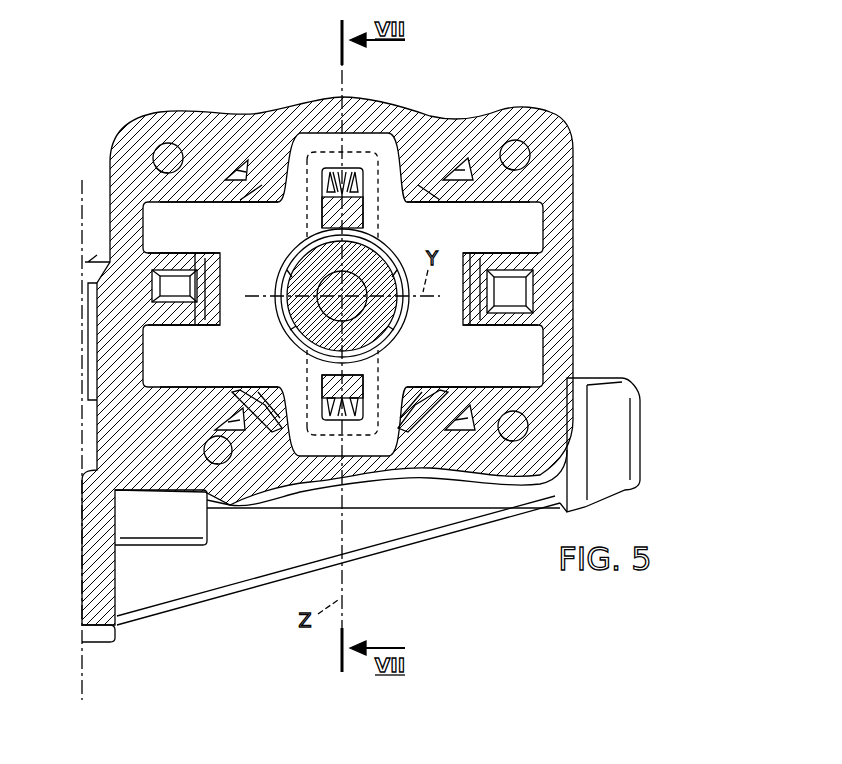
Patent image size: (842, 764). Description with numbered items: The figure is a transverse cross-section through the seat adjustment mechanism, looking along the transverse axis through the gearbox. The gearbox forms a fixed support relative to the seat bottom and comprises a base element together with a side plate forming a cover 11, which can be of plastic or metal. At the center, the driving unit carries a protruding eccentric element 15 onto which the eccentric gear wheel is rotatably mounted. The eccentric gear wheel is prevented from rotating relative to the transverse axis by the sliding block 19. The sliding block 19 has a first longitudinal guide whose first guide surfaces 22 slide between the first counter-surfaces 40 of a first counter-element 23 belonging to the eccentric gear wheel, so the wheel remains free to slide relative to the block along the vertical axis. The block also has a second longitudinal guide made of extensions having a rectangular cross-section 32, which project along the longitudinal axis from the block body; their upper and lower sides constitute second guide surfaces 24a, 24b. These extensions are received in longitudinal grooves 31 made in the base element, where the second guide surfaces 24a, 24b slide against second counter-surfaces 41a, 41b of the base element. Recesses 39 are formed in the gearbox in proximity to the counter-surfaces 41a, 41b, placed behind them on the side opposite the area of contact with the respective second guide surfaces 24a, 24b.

The cover 11 is at (505, 115).
The eccentric element 15 is at (287, 278).
The sliding block 19 is at (215, 373).
The first guide surfaces 22 is at (320, 200).
The first counter-element 23 is at (358, 172).
The second guide surface 24a is at (223, 206).
The second guide surface 24b is at (183, 247).
The longitudinal grooves 31 is at (153, 226).
The extensions having a rectangular cross-section 32 is at (185, 215).
The recesses 39 is at (238, 168).
The first counter-surfaces 40 is at (338, 190).
The second counter-surface 41a is at (201, 201).
The second counter-surface 41b is at (153, 258).